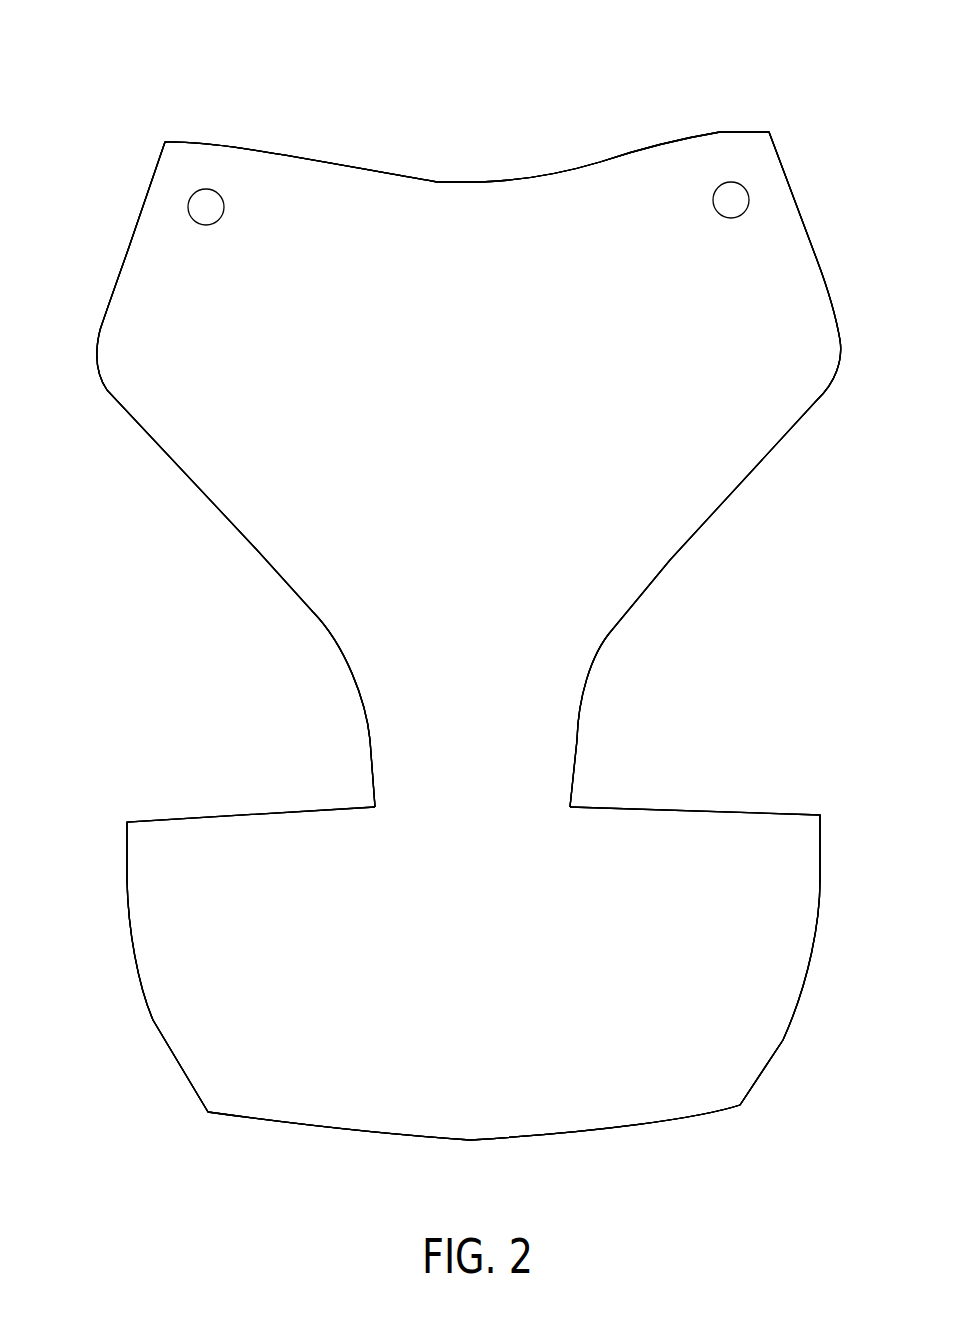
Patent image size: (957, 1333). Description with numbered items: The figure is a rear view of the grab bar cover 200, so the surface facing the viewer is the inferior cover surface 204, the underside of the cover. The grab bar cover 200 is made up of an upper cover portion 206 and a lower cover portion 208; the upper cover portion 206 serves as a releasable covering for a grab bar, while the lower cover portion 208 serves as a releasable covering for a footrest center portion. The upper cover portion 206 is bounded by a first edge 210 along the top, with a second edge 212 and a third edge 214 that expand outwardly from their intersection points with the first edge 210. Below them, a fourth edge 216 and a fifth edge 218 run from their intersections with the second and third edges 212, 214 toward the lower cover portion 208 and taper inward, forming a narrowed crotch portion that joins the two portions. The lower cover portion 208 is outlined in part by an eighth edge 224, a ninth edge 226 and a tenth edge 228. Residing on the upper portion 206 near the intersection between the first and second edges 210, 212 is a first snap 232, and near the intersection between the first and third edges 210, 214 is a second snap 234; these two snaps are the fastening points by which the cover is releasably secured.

The grab bar cover 200 is at (170, 80).
The inferior cover surface 204 is at (453, 570).
The upper cover portion 206 is at (482, 388).
The lower cover portion 208 is at (487, 1015).
The first edge 210 is at (437, 182).
The second edge 212 is at (810, 232).
The third edge 214 is at (132, 235).
The fourth edge 216 is at (612, 630).
The fifth edge 218 is at (313, 612).
The eighth edge 224 is at (783, 1040).
The ninth edge 226 is at (153, 1020).
The tenth edge 228 is at (478, 1137).
The first snap 232 is at (731, 197).
The second snap 234 is at (207, 200).